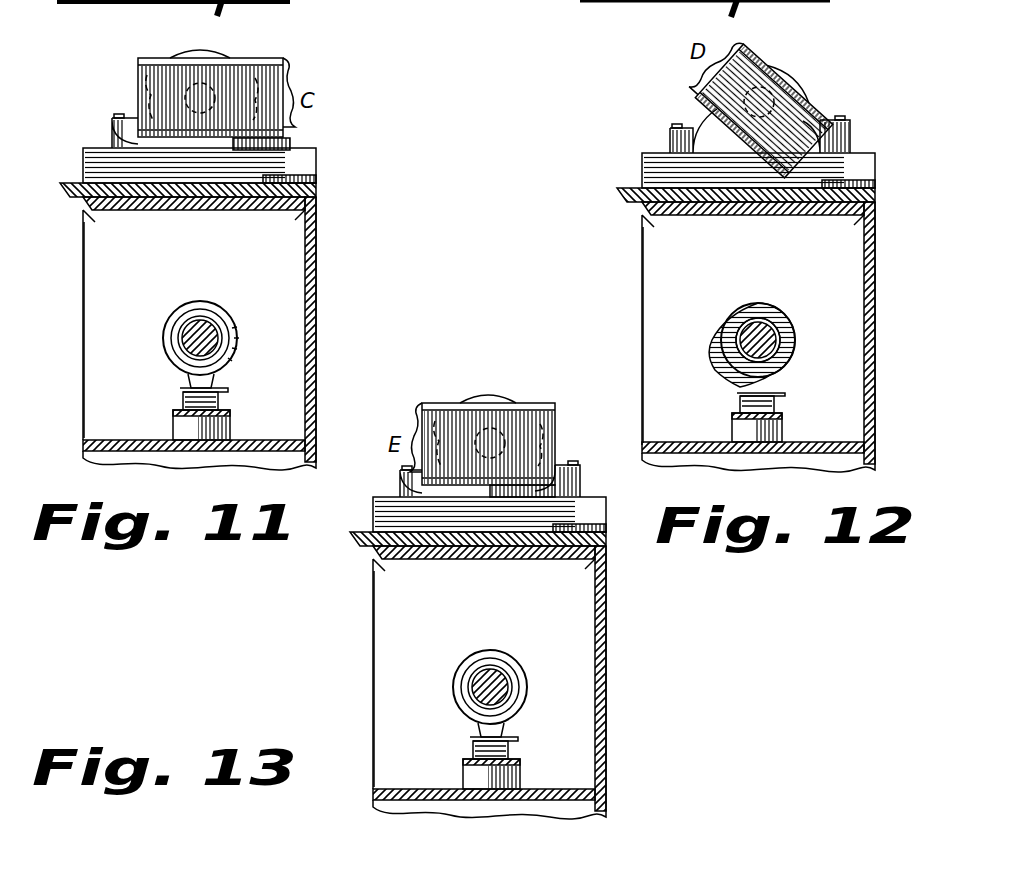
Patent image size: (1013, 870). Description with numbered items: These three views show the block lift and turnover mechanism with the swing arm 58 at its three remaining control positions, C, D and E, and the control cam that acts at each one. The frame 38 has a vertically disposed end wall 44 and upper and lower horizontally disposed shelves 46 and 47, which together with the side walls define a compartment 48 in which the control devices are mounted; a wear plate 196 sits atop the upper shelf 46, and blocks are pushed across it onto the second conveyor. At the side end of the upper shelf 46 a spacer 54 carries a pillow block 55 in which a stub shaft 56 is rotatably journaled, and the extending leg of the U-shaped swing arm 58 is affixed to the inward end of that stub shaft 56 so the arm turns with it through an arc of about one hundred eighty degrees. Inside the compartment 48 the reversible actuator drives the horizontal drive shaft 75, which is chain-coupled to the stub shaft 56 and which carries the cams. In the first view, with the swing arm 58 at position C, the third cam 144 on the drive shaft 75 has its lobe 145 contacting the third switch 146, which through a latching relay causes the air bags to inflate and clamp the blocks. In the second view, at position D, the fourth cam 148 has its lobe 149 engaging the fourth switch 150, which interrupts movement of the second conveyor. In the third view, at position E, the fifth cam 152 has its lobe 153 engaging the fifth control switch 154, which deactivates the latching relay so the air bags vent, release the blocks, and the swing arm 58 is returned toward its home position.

In FIG. 11, the frame 38 is at (318, 280).
In FIG. 13, the frame 38 is at (629, 678).
In FIG. 12, the frame 38 is at (889, 333).
In FIG. 11, the end wall 44 is at (310, 242).
In FIG. 13, the end wall 44 is at (619, 678).
In FIG. 12, the end wall 44 is at (884, 333).
In FIG. 11, the upper shelf 46 is at (84, 222).
In FIG. 13, the upper shelf 46 is at (355, 674).
In FIG. 12, the upper shelf 46 is at (627, 330).
In FIG. 11, the lower shelf 47 is at (92, 440).
In FIG. 13, the lower shelf 47 is at (463, 790).
In FIG. 12, the lower shelf 47 is at (734, 443).
In FIG. 11, the compartment 48 is at (98, 318).
In FIG. 13, the compartment 48 is at (358, 679).
In FIG. 12, the compartment 48 is at (627, 335).
In FIG. 11, the spacer 54 is at (305, 170).
In FIG. 13, the spacer 54 is at (498, 495).
In FIG. 12, the spacer 54 is at (761, 153).
In FIG. 11, the pillow block 55 is at (191, 56).
In FIG. 13, the pillow block 55 is at (490, 417).
In FIG. 12, the pillow block 55 is at (760, 108).
In FIG. 11, the stub shaft 56 is at (236, 70).
In FIG. 13, the stub shaft 56 is at (488, 413).
In FIG. 12, the stub shaft 56 is at (798, 98).
In FIG. 11, the swing arm 58 is at (286, 60).
In FIG. 13, the swing arm 58 is at (439, 412).
In FIG. 12, the swing arm 58 is at (747, 61).
In FIG. 11, the drive shaft 75 is at (206, 323).
In FIG. 13, the drive shaft 75 is at (488, 662).
In FIG. 12, the drive shaft 75 is at (746, 322).
In FIG. 11, the third cam 144 is at (233, 338).
In FIG. 11, the lobe 145 is at (190, 380).
In FIG. 11, the third switch 146 is at (220, 403).
In FIG. 12, the fourth cam 148 is at (778, 337).
In FIG. 12, the lobe 149 is at (721, 345).
In FIG. 12, the fourth switch 150 is at (780, 413).
In FIG. 13, the fifth cam 152 is at (510, 678).
In FIG. 13, the lobe 153 is at (467, 728).
In FIG. 13, the fifth control switch 154 is at (514, 760).
In FIG. 11, the wear plate 196 is at (66, 182).
In FIG. 13, the wear plate 196 is at (463, 529).
In FIG. 12, the wear plate 196 is at (722, 191).